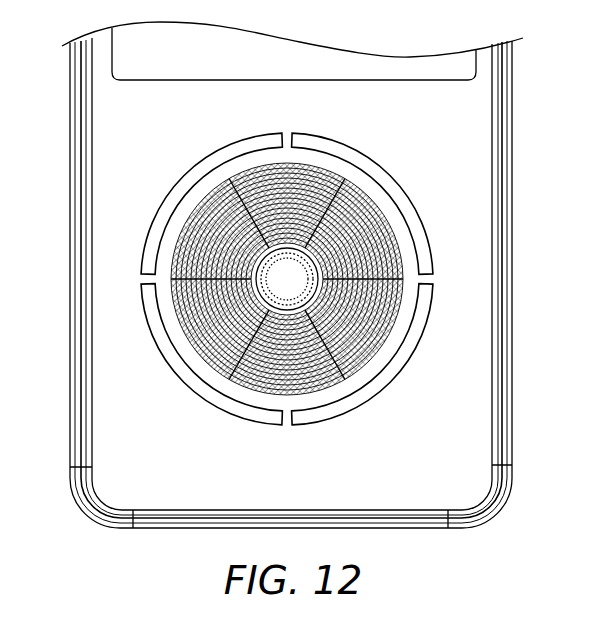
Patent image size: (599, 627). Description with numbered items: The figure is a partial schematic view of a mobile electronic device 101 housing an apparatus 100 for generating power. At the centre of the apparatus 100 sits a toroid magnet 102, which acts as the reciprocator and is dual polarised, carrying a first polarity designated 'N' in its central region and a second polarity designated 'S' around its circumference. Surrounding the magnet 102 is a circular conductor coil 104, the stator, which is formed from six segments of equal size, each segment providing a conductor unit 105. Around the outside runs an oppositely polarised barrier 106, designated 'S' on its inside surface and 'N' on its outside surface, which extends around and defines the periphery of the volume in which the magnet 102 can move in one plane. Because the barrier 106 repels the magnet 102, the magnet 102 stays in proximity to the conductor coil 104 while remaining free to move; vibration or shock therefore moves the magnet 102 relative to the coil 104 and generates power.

The apparatus for generating power 100 is at (80, 518).
The mobile electronic device 101 is at (468, 113).
The toroid magnet 102 is at (256, 262).
The circular conductor coil 104 is at (183, 324).
The conductor unit 105 is at (400, 311).
The oppositely polarised barrier 106 is at (310, 284).